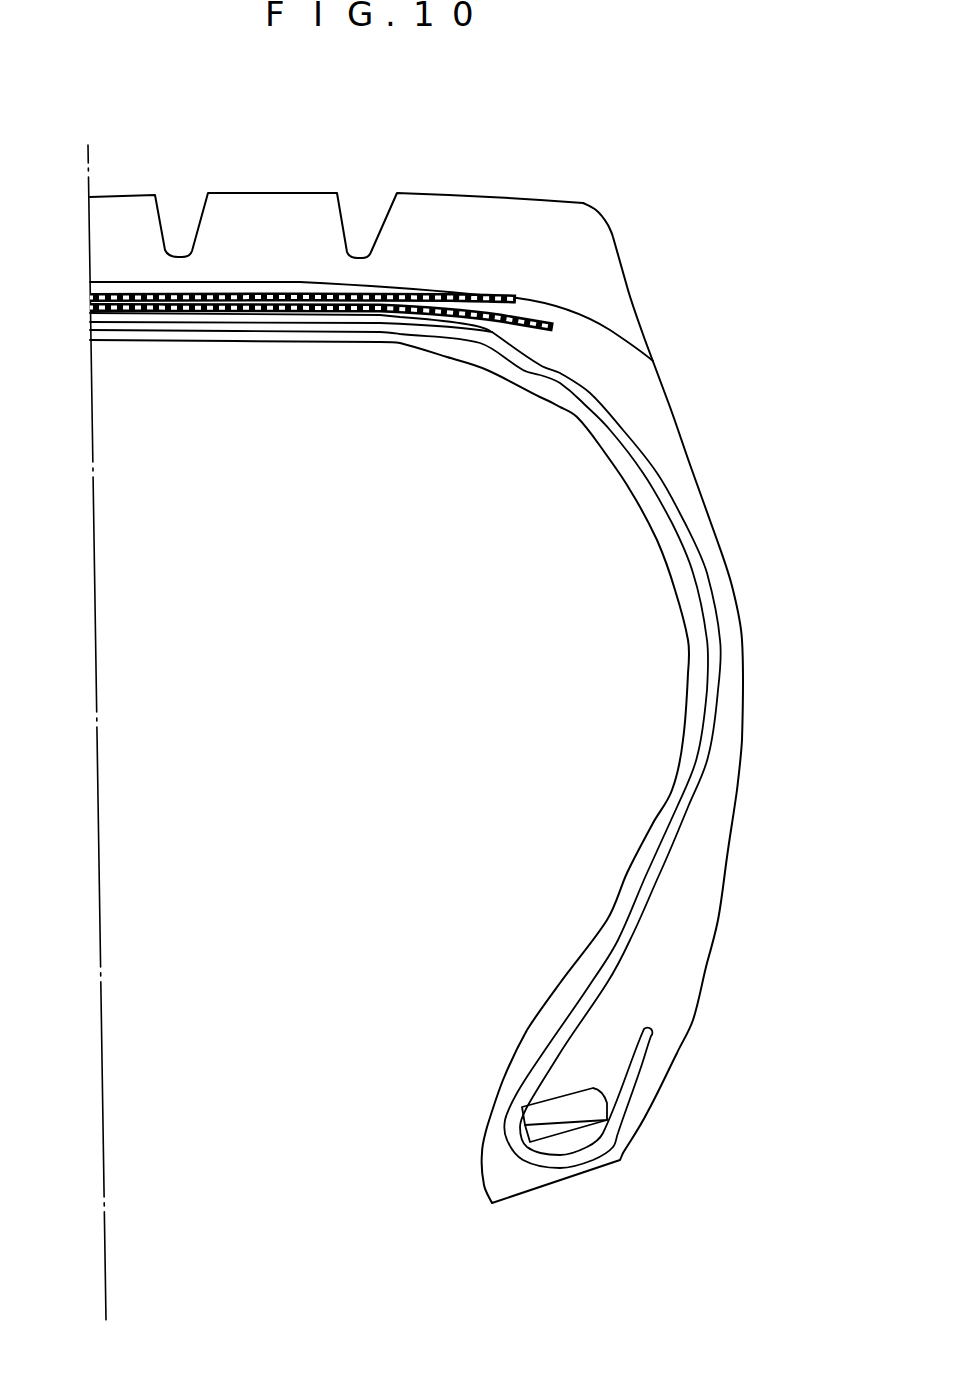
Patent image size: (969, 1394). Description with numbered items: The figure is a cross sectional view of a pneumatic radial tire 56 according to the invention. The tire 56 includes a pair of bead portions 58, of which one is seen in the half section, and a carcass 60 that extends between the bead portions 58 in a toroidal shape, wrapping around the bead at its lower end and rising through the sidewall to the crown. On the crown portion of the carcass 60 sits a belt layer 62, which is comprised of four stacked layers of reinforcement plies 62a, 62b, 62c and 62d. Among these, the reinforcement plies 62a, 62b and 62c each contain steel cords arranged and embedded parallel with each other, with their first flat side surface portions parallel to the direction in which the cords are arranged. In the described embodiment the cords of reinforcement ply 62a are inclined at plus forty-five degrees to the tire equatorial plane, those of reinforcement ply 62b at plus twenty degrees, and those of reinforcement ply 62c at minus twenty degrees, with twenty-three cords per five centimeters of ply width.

The tire 56 is at (533, 127).
The bead portions 58 is at (647, 1083).
The carcass 60 is at (697, 788).
The belt layer 62 is at (462, 298).
The reinforcement ply 62a is at (492, 331).
The reinforcement ply 62b is at (556, 332).
The reinforcement ply 62c is at (523, 298).
The reinforcement ply 62d is at (422, 290).